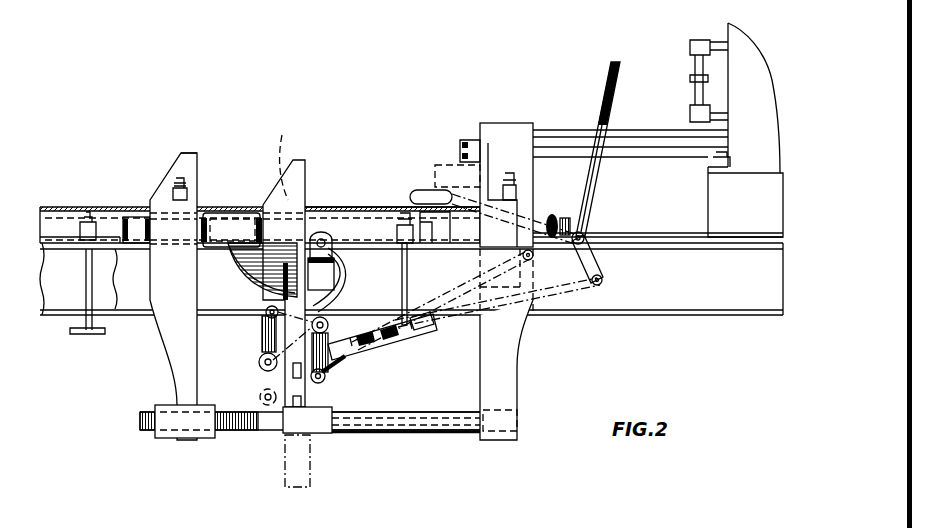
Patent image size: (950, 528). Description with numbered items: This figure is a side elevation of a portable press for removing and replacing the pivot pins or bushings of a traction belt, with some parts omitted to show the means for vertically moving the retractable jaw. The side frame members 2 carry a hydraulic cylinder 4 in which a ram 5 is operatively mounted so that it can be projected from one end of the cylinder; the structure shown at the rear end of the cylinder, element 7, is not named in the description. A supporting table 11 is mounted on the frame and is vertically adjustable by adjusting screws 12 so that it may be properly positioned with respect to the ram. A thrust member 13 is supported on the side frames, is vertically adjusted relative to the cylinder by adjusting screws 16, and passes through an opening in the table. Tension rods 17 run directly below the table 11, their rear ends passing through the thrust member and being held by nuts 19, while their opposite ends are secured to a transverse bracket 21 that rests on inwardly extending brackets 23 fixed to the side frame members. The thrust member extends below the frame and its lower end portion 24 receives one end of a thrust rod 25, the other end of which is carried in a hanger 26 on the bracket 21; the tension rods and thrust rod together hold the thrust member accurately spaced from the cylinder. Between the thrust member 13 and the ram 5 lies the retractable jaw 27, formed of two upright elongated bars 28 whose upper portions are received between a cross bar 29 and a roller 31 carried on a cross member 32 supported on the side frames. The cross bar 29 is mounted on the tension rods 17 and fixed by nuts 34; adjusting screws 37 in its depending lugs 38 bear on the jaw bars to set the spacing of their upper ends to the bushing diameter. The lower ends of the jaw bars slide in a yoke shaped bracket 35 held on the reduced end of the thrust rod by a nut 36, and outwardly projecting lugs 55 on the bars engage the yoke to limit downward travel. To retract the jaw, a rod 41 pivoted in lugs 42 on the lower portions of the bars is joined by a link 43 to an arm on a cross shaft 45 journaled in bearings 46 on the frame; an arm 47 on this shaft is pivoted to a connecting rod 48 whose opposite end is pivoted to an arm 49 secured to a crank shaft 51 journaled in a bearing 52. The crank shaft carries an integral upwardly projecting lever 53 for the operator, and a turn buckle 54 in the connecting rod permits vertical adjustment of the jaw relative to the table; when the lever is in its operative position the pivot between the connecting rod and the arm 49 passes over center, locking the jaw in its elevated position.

The side frame members 2 is at (656, 300).
The hydraulic cylinder 4 is at (637, 135).
The ram 5 is at (449, 164).
The housing 7 is at (760, 76).
The supporting table 11 is at (118, 205).
The adjusting screws 12 is at (86, 281).
The thrust member 13 is at (192, 140).
The adjusting screws 16 is at (178, 195).
The tension rods 17 is at (366, 222).
The nuts 19 is at (143, 234).
The transverse bracket 21 is at (515, 123).
The brackets 23 is at (514, 205).
The lower end portion 24 is at (185, 440).
The thrust rod 25 is at (418, 430).
The hanger 26 is at (510, 380).
The retractable jaw 27 is at (292, 187).
The upright elongated bars 28 is at (299, 178).
The cross bar 29 is at (240, 214).
The roller 31 is at (332, 250).
The cross member 32 is at (335, 263).
The nuts 34 is at (213, 213).
The yoke shaped bracket 35 is at (328, 436).
The nut 36 is at (262, 430).
The adjusting screws 37 is at (272, 290).
The depending lugs 38 is at (268, 276).
The rod 41 is at (264, 362).
The lugs 42 is at (262, 368).
The link 43 is at (262, 347).
The cross shaft 45 is at (322, 319).
The bearings 46 is at (329, 323).
The arm 47 is at (330, 362).
The connecting rod 48 is at (436, 312).
The arm 49 is at (605, 272).
The crank shaft 51 is at (583, 234).
The bearing 52 is at (596, 233).
The lever 53 is at (623, 68).
The turn buckle 54 is at (385, 350).
The lugs 55 is at (293, 375).